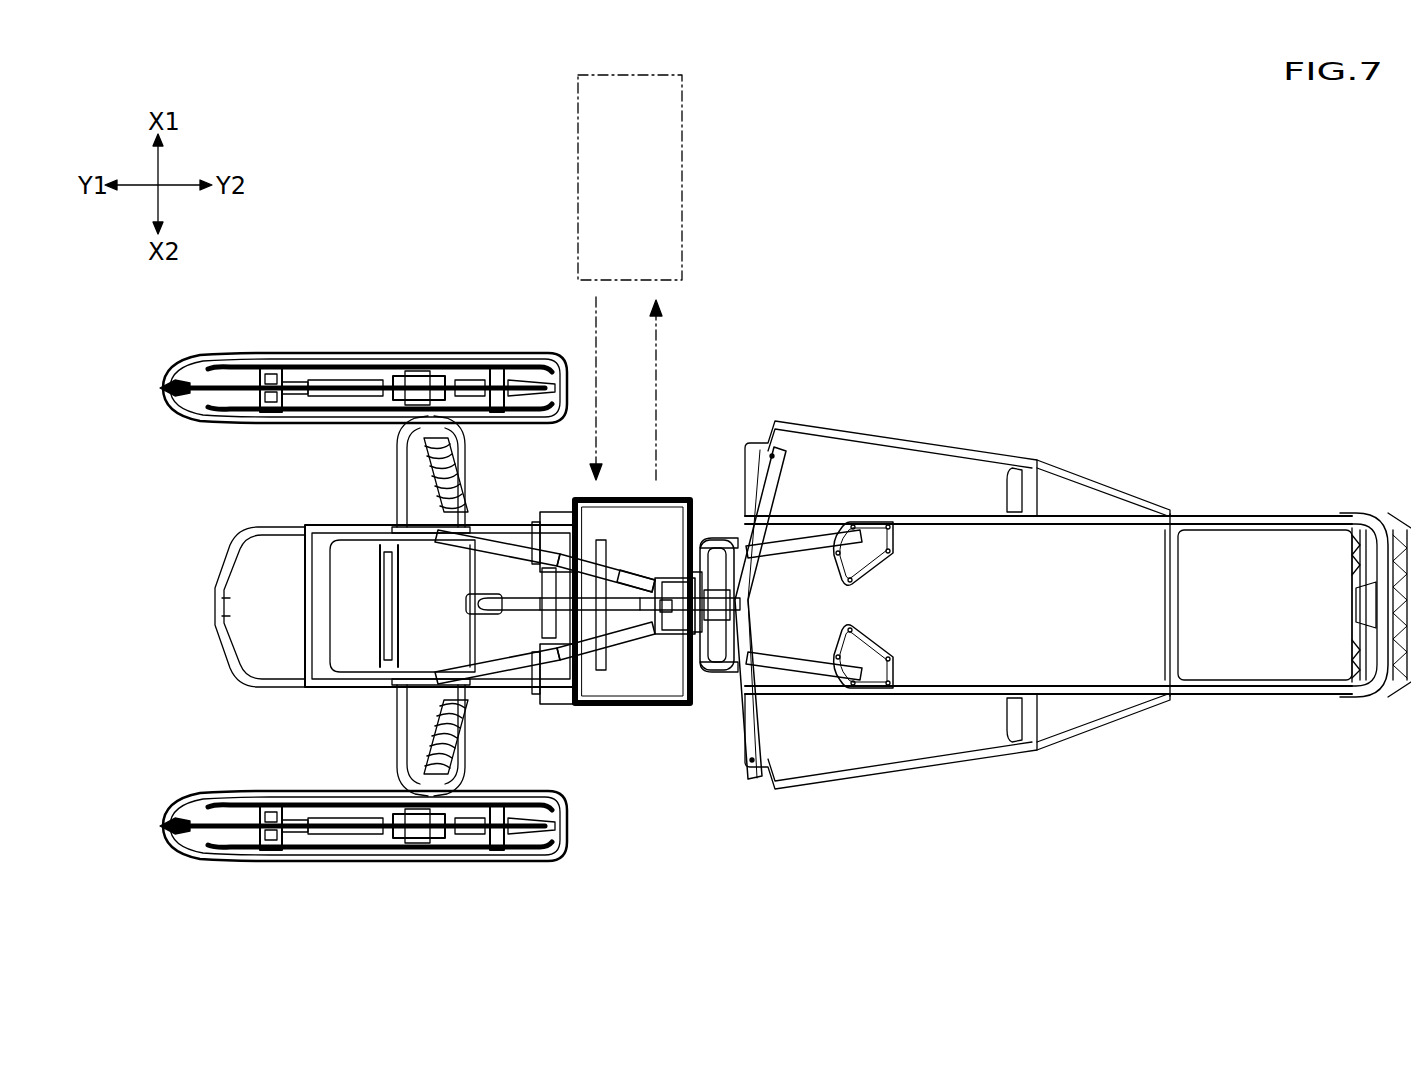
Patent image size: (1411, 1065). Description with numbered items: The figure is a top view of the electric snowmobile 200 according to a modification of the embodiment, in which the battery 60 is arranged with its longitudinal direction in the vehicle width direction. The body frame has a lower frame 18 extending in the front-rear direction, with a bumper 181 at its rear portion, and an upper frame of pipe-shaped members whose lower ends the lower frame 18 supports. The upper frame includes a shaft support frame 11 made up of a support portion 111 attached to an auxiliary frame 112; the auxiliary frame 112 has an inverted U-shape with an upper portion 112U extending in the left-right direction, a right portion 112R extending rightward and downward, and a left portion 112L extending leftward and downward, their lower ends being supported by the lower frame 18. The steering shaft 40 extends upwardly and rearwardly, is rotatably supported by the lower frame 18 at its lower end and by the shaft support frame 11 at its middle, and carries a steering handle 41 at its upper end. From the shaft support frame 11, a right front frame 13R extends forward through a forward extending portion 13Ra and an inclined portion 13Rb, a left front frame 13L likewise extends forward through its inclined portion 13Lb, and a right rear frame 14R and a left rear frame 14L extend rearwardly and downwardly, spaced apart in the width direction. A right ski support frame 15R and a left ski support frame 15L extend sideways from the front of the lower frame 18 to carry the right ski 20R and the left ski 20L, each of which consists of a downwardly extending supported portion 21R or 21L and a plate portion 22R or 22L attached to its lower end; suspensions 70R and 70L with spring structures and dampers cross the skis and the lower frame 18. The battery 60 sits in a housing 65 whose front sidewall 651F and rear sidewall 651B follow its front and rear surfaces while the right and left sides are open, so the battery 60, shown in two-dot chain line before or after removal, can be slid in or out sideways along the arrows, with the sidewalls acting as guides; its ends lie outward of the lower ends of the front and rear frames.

The electric snowmobile 200 is at (942, 272).
The battery 60 is at (603, 75).
The steering shaft 40 is at (478, 600).
The steering handle 41 is at (772, 450).
The housing 65 is at (640, 500).
The shaft support frame 11 is at (668, 646).
The support portion 111 is at (665, 578).
The auxiliary frame 112 is at (728, 630).
The upper portion 112U is at (730, 596).
The right portion 112R is at (716, 540).
The left portion 112L is at (720, 672).
The right front frame 13R is at (600, 568).
The forward extending portion 13Ra is at (636, 576).
The inclined portion 13Rb is at (510, 548).
The left front frame 13L is at (630, 644).
The inclined portion 13Lb is at (512, 668).
The right rear frame 14R is at (795, 545).
The left rear frame 14L is at (812, 672).
The right ski support frame 15R is at (396, 495).
The left ski support frame 15L is at (396, 735).
The suspension 70R is at (428, 472).
The suspension 70L is at (432, 740).
The lower frame 18 is at (1060, 516).
The bumper 181 is at (1368, 512).
The right ski 20R is at (363, 359).
The left ski 20L is at (363, 868).
The supported portion 21R is at (432, 378).
The supported portion 21L is at (434, 840).
The plate portion 22R is at (243, 356).
The plate portion 22L is at (223, 862).
The front sidewall 651F is at (560, 680).
The rear sidewall 651B is at (712, 668).